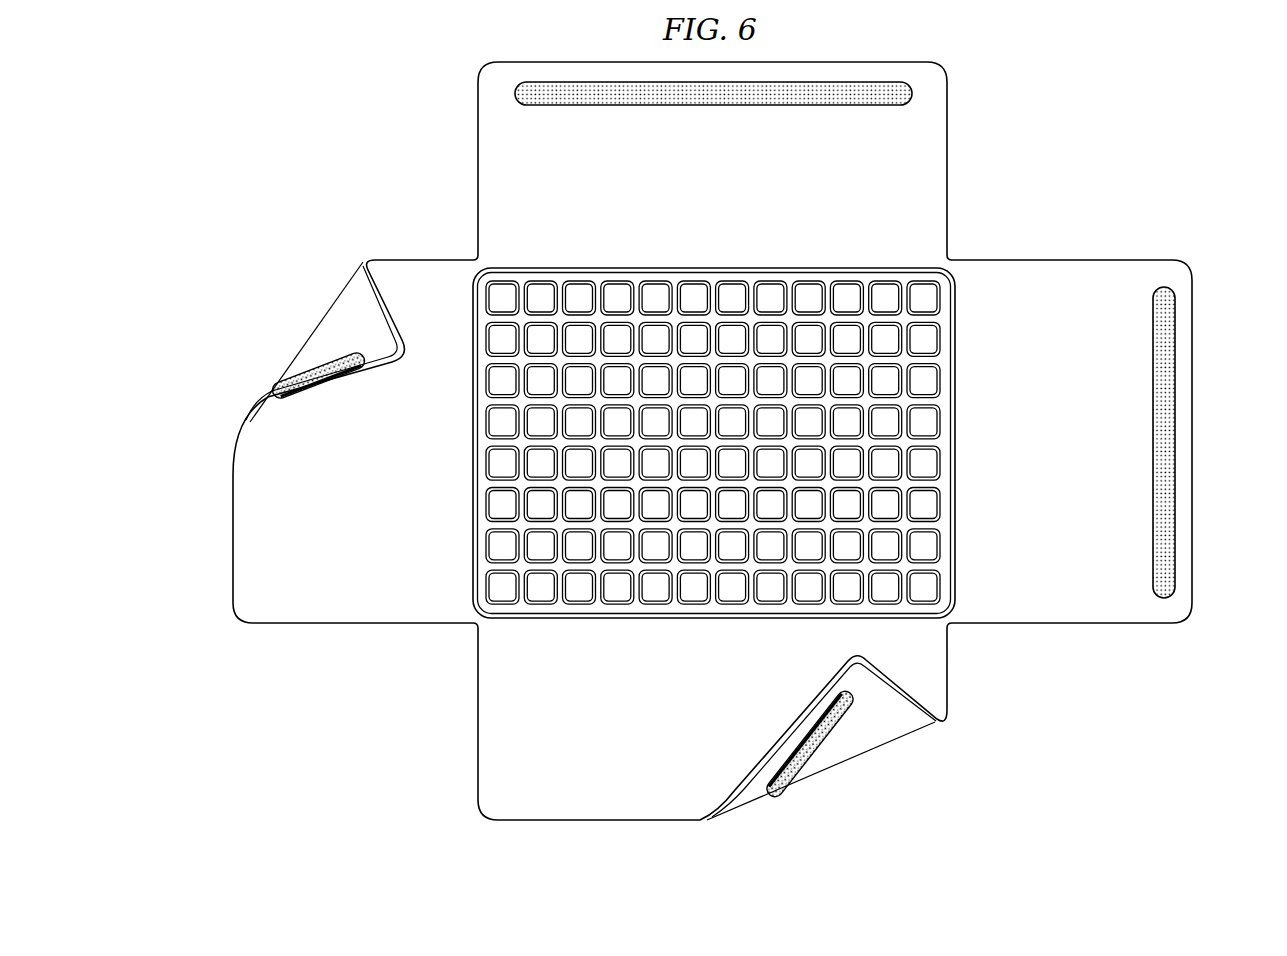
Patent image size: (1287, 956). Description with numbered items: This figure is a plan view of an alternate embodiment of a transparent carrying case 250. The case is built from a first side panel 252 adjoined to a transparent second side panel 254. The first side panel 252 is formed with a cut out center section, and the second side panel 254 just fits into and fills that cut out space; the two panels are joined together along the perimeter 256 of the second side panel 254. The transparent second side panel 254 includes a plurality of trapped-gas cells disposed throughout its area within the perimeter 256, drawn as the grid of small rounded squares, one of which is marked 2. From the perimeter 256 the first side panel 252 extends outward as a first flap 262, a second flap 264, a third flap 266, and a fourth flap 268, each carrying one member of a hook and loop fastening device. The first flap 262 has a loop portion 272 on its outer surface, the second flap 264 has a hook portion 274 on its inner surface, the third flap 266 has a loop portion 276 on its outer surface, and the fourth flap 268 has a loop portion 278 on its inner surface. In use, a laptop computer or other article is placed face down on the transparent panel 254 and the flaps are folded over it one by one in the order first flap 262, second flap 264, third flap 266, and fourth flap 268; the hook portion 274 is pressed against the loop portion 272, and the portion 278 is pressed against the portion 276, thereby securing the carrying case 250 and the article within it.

The cell 2 is at (927, 463).
The carrying case 250 is at (1131, 171).
The first side panel 252 is at (950, 625).
The second side panel 254 is at (943, 362).
The perimeter 256 is at (754, 268).
The first flap 262 is at (233, 507).
The second flap 264 is at (1085, 259).
The third flap 266 is at (478, 735).
The fourth flap 268 is at (478, 150).
The loop portion 272 is at (306, 366).
The hook portion 274 is at (1192, 476).
The loop portion 276 is at (810, 765).
The loop portion 278 is at (838, 83).